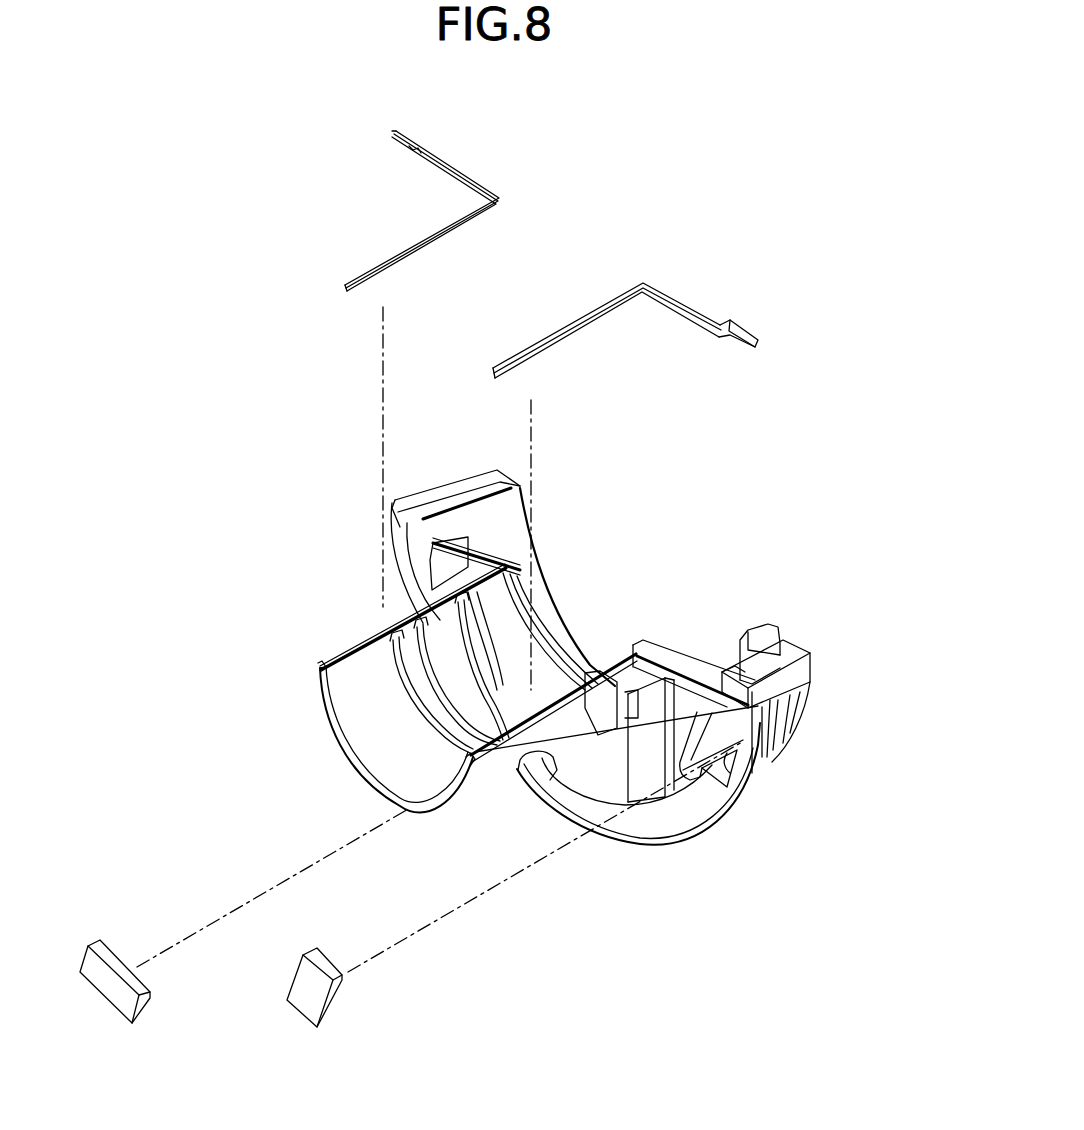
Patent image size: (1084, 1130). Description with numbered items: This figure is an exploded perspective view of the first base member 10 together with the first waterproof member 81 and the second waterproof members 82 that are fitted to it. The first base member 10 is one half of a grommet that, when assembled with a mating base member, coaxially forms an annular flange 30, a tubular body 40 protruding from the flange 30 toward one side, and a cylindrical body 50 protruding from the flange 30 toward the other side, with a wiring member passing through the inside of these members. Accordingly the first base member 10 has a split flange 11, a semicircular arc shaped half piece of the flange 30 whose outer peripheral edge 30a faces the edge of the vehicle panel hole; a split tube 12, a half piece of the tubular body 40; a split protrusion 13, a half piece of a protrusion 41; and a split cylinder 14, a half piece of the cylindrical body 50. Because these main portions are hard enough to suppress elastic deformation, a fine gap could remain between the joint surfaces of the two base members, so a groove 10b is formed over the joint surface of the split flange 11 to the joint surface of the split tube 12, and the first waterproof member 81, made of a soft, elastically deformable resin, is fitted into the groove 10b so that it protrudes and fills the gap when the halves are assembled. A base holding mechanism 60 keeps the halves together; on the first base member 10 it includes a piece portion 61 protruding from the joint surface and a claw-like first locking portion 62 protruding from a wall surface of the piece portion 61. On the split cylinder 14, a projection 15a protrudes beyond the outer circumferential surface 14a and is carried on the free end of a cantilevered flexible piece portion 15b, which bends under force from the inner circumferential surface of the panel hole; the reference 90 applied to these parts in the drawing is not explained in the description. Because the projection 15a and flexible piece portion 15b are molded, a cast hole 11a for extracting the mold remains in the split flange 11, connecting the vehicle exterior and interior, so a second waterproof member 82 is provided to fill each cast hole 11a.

The first base member 10 is at (288, 556).
The groove 10b is at (363, 640).
The split flange 11 is at (596, 786).
The cast hole 11a is at (528, 762).
The split tube 12 is at (392, 713).
The split protrusion 13 is at (374, 672).
The split cylinder 14 is at (527, 580).
The outer circumferential surface 14a is at (781, 682).
The projection 15a is at (805, 738).
The flexible piece portion 15b is at (866, 714).
The flange 30 is at (596, 786).
The outer peripheral edge 30a is at (640, 836).
The tubular body 40 is at (377, 782).
The protrusion 41 is at (477, 673).
The cylindrical body 50 is at (543, 618).
The base holding mechanism 60 is at (763, 650).
The piece portion 61 is at (737, 660).
The first locking portion 62 is at (779, 631).
The first waterproof member 81 is at (452, 172).
The second waterproof member 82 is at (112, 982).
The slit portion 90 is at (807, 708).